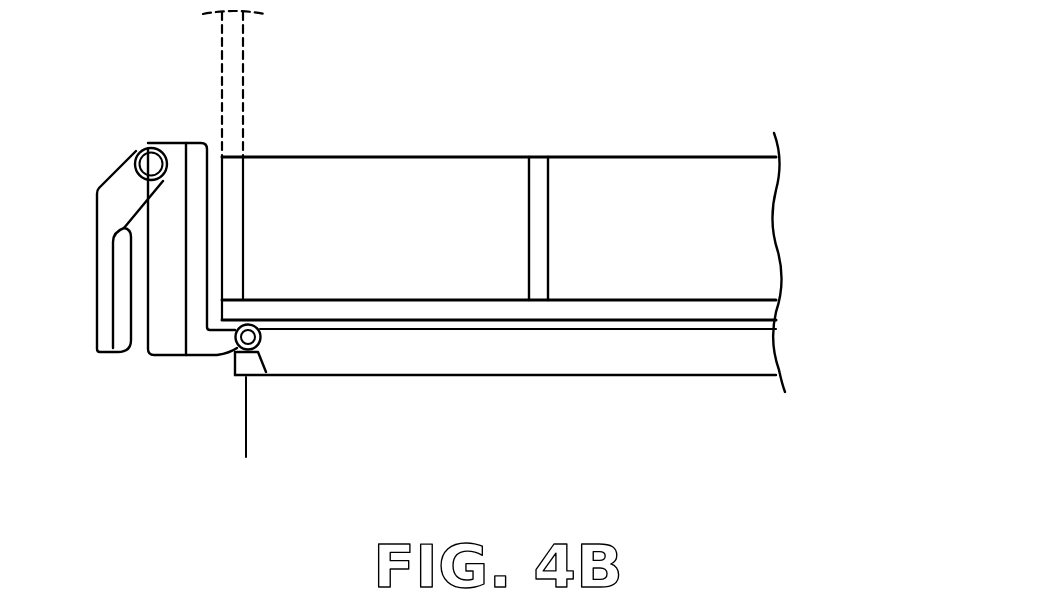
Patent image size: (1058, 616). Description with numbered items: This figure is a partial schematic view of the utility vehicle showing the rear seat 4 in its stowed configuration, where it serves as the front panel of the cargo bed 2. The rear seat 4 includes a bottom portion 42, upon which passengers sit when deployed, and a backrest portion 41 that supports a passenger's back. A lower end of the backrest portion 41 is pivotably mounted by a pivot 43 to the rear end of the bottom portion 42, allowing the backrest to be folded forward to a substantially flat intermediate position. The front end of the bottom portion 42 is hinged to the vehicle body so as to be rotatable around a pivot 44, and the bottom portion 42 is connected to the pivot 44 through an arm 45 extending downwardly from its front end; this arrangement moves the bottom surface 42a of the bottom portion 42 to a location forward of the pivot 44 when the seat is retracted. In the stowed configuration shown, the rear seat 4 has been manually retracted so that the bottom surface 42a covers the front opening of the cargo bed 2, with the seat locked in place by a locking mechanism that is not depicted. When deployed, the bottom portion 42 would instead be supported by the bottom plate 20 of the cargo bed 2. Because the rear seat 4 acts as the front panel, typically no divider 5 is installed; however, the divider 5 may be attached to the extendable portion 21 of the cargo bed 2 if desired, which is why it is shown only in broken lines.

The cargo bed 2 is at (662, 154).
The bottom plate 20 is at (768, 310).
The extendable portion 21 is at (406, 156).
The rear seat 4 is at (125, 137).
The backrest portion 41 is at (103, 352).
The bottom portion 42 is at (162, 348).
The bottom surface 42a is at (210, 202).
The pivot 43 is at (148, 148).
The pivot 44 is at (253, 348).
The arm 45 is at (212, 348).
The divider 5 is at (247, 62).